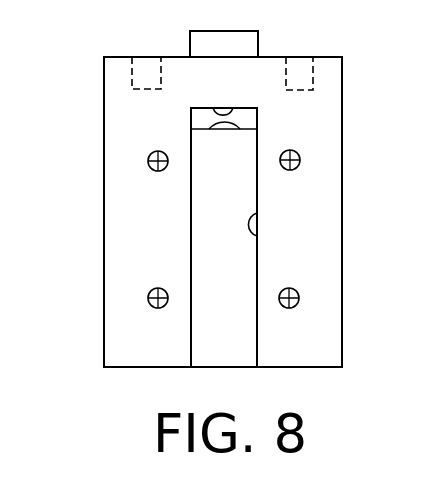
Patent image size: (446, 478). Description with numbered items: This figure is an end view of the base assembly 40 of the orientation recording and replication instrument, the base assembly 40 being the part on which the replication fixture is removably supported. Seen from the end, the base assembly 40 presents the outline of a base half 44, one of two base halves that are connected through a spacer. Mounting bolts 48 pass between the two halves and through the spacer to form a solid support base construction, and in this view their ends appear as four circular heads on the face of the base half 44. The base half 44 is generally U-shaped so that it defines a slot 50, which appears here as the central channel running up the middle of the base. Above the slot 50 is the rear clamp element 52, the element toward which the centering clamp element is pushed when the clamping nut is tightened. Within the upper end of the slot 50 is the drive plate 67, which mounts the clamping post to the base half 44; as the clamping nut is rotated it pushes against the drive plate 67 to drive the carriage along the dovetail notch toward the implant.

The base assembly 40 is at (343, 102).
The base half 44 is at (121, 225).
The mounting bolts 48 is at (300, 157).
The slot 50 is at (257, 236).
The rear clamp element 52 is at (243, 43).
The drive plate 67 is at (205, 120).